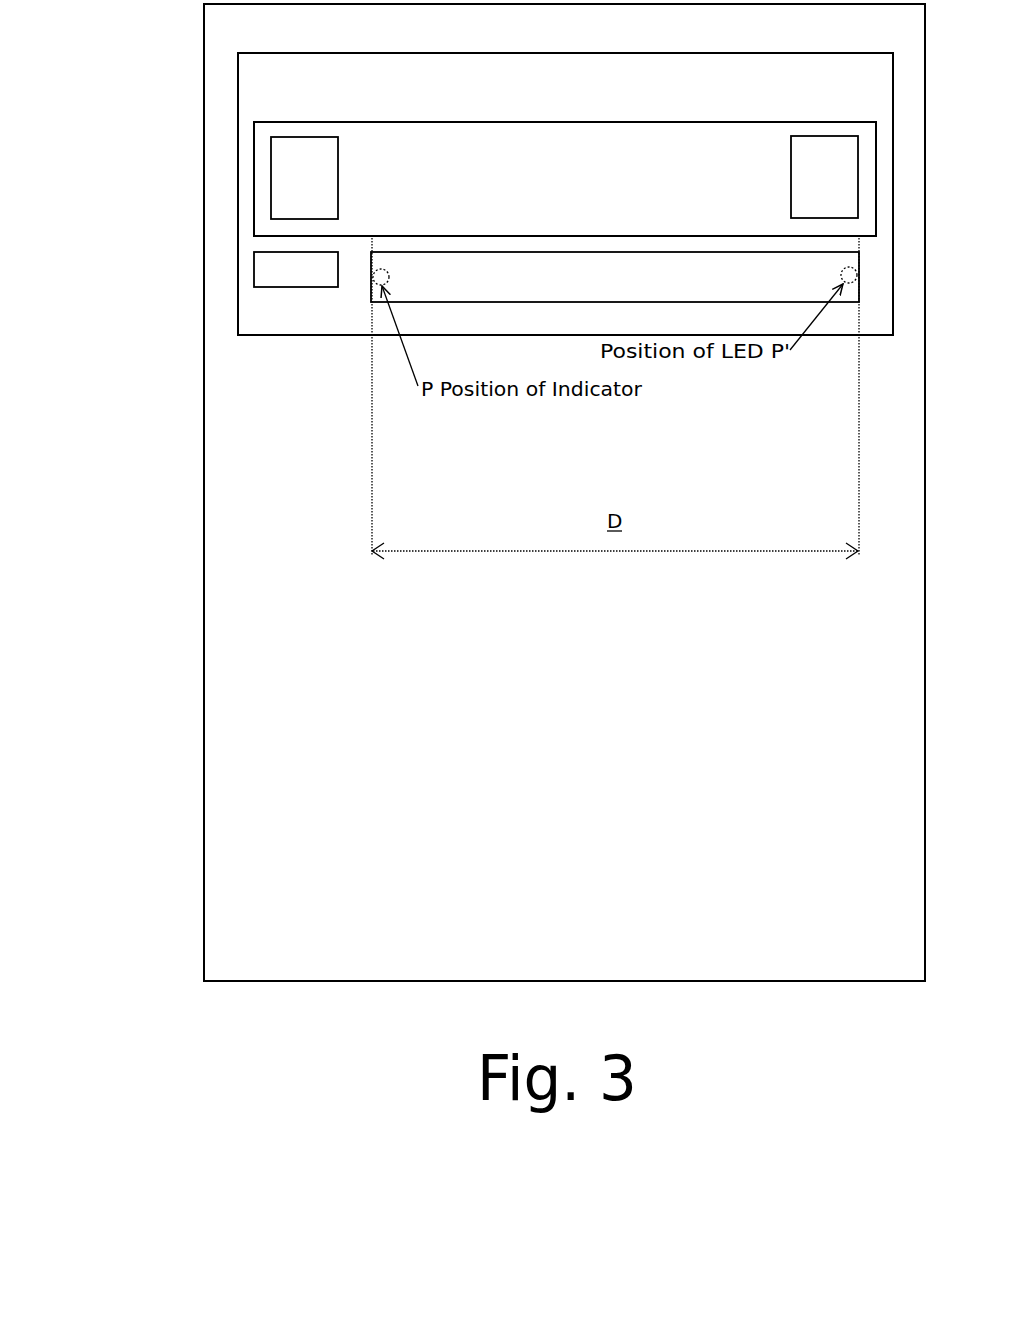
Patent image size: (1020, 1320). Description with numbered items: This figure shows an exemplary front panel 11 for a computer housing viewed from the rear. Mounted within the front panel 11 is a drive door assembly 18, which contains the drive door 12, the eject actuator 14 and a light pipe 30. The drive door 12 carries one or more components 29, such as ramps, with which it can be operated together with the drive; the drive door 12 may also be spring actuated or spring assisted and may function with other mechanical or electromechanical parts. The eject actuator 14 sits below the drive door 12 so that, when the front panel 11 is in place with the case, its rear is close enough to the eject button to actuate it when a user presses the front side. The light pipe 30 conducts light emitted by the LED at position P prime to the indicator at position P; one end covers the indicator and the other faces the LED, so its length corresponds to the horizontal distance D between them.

The front panel 11 is at (379, 36).
The drive door assembly 18 is at (546, 85).
The drive door 12 is at (593, 152).
The components 29 is at (319, 168).
The eject actuator 14 is at (288, 268).
The light pipe 30 is at (684, 284).